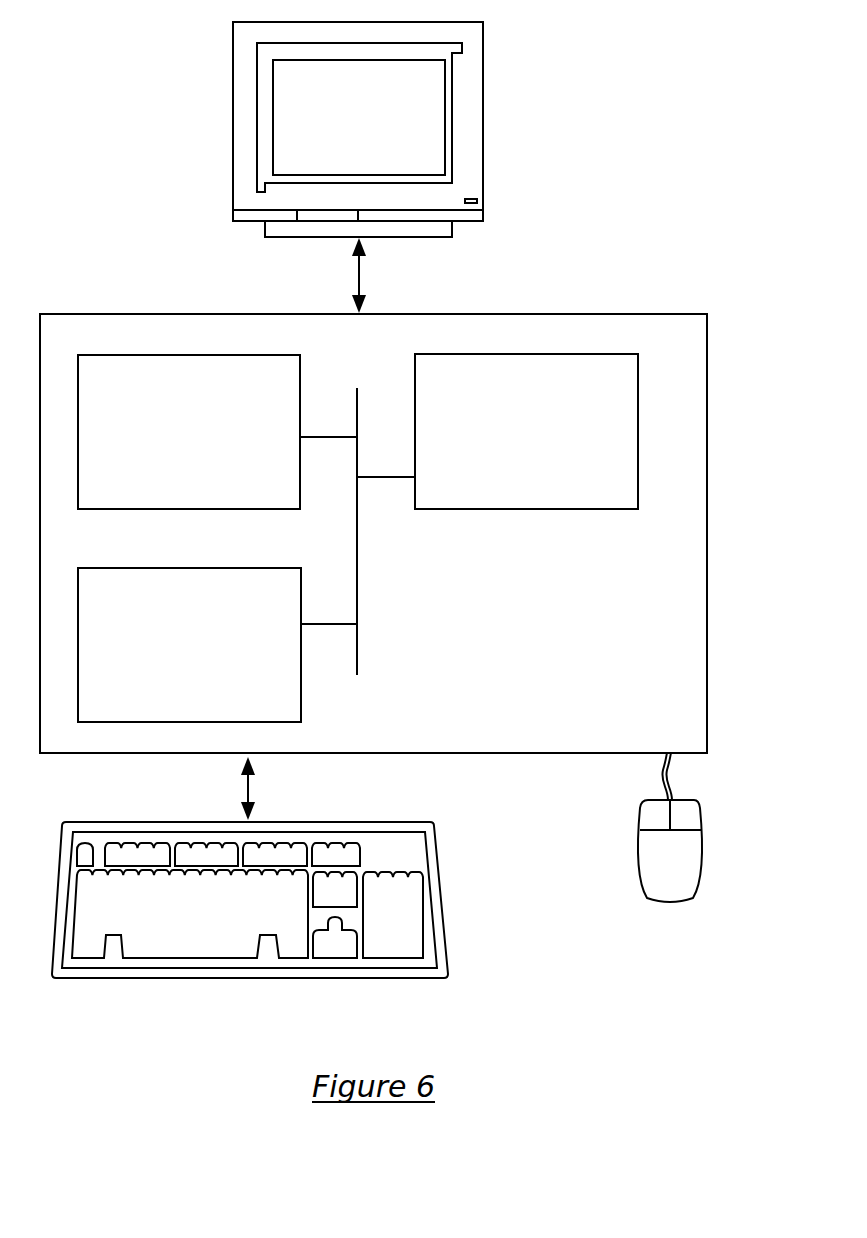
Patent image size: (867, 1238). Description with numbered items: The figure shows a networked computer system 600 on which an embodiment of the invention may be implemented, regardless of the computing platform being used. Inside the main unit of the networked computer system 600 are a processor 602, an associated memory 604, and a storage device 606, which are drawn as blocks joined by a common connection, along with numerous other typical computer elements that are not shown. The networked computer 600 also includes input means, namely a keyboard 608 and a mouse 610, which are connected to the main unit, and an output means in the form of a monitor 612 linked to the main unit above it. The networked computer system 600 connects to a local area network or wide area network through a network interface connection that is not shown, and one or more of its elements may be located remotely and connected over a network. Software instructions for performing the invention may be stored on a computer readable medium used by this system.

The networked computer system 600 is at (677, 203).
The processor 602 is at (509, 434).
The memory 604 is at (168, 444).
The storage device 606 is at (167, 656).
The keyboard 608 is at (161, 937).
The mouse 610 is at (649, 872).
The monitor 612 is at (337, 132).